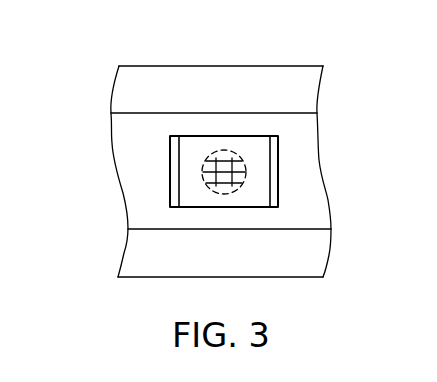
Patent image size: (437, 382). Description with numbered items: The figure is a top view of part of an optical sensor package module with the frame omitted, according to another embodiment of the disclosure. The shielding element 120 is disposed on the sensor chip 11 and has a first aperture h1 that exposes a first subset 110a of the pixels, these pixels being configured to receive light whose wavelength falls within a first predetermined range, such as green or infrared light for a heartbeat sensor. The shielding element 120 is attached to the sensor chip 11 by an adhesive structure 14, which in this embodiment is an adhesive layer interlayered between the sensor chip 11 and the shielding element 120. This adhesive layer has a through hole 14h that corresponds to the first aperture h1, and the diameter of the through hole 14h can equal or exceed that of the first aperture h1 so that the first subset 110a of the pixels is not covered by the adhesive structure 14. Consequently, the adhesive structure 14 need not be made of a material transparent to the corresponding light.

The sensor chip 11 is at (140, 125).
The adhesive structure 14 is at (173, 192).
The through hole 14h is at (218, 150).
The first aperture h1 is at (227, 158).
The shielding element 120 is at (260, 160).
The first subset of the pixels 110a is at (245, 172).